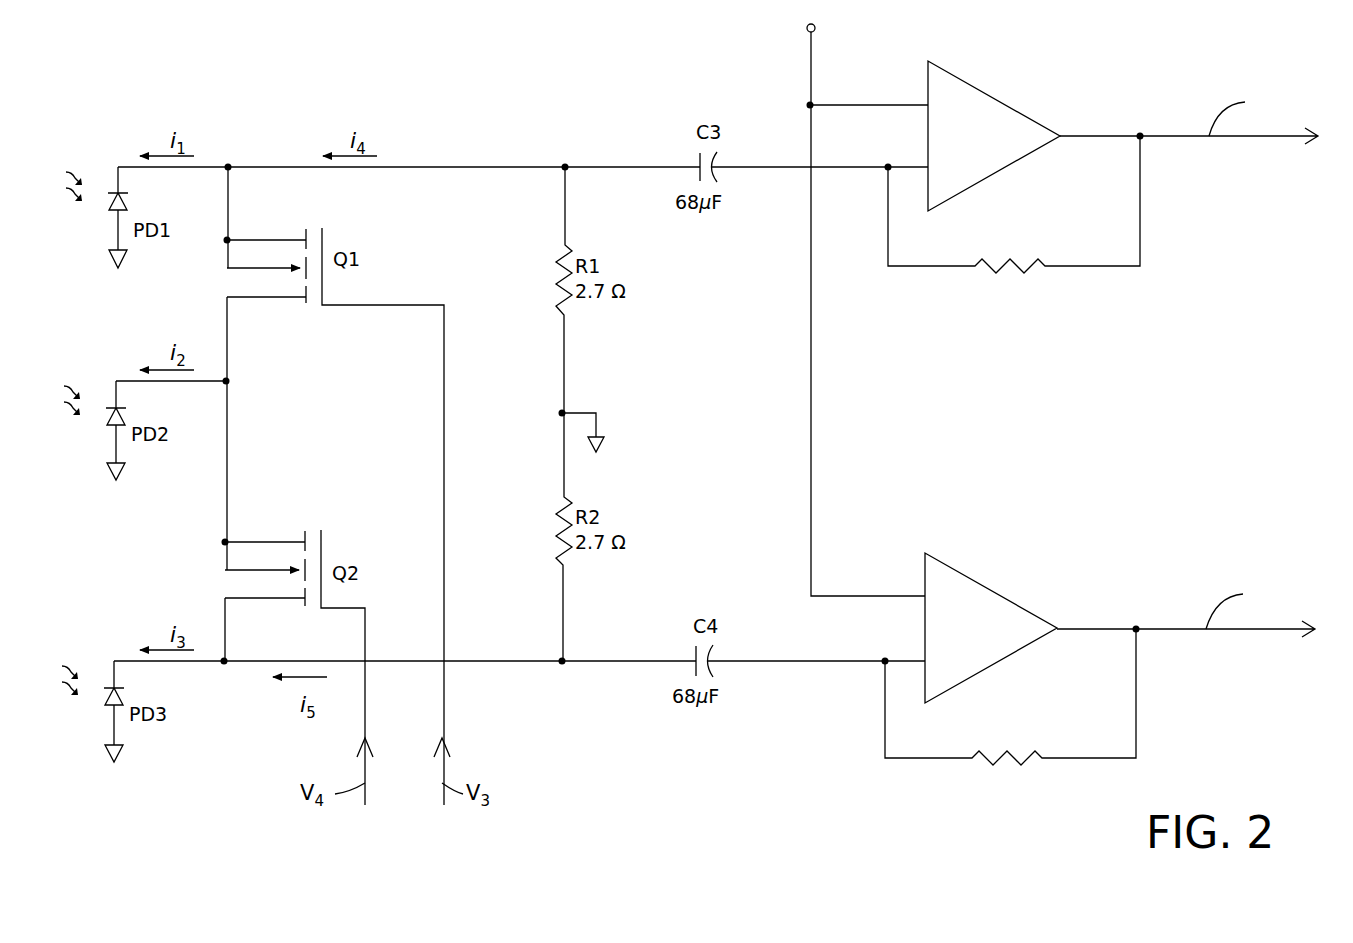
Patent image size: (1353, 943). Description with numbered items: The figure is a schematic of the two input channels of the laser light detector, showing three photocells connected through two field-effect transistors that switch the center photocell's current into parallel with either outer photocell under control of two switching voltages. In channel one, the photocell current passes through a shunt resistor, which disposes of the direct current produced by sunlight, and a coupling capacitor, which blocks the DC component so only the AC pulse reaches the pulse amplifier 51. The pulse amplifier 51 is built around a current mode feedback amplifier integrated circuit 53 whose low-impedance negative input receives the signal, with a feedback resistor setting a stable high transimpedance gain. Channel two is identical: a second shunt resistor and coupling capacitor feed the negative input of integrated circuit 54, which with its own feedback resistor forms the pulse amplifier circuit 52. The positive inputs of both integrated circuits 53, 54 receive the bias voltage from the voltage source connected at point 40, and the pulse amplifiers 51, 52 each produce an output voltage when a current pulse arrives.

The bias voltage connection point 40 is at (806, 30).
The pulse amplifier 51 is at (1103, 167).
The pulse amplifier circuit 52 is at (1100, 659).
The current mode feedback amplifier integrated circuit 53 is at (993, 118).
The current mode amplifier integrated circuit 54 is at (990, 612).